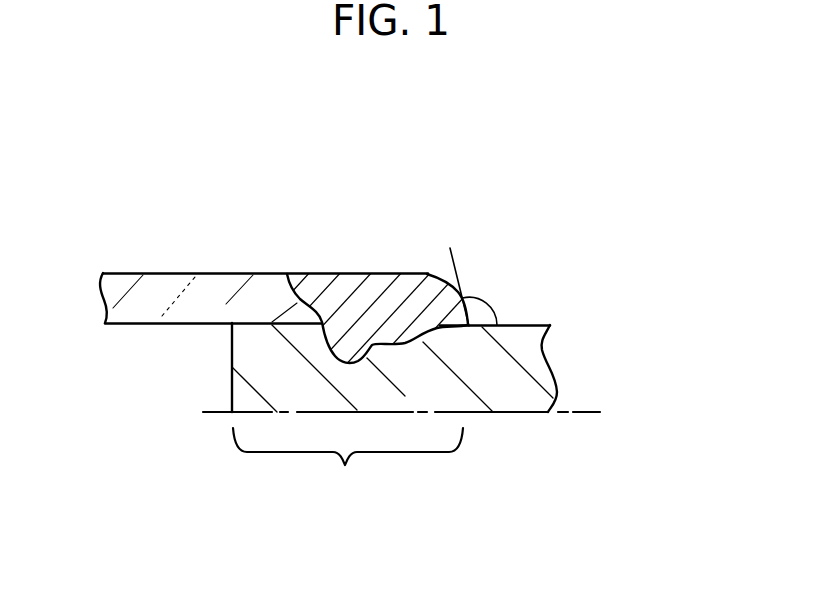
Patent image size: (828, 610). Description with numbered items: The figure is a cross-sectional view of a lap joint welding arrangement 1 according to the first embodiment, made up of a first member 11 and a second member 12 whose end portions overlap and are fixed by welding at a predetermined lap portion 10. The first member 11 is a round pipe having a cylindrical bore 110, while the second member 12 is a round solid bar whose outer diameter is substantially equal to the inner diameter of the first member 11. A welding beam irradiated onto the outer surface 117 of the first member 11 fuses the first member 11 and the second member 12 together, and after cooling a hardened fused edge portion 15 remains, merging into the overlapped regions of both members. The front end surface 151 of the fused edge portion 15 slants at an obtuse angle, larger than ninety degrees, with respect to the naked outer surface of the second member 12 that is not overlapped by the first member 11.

The lap joint welding arrangement 1 is at (579, 288).
The lap portion 10 is at (401, 417).
The first member 11 is at (162, 300).
The cylindrical bore 110 is at (185, 325).
The outer surface 117 is at (208, 273).
The second member 12 is at (508, 378).
The fused edge portion 15 is at (363, 306).
The front end surface 151 is at (477, 298).